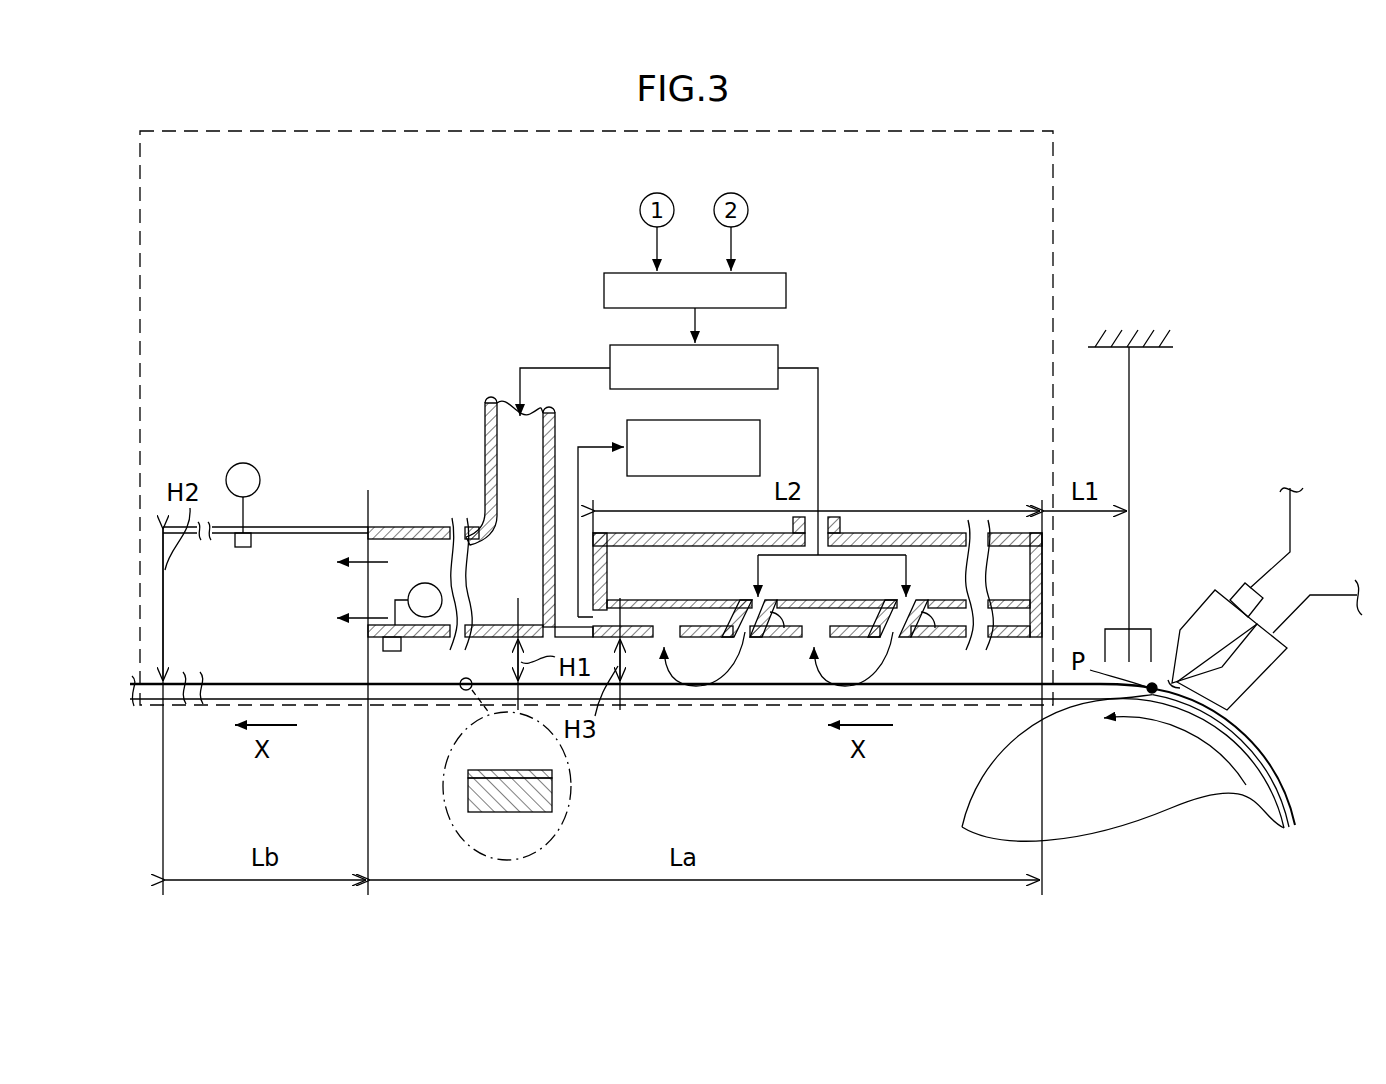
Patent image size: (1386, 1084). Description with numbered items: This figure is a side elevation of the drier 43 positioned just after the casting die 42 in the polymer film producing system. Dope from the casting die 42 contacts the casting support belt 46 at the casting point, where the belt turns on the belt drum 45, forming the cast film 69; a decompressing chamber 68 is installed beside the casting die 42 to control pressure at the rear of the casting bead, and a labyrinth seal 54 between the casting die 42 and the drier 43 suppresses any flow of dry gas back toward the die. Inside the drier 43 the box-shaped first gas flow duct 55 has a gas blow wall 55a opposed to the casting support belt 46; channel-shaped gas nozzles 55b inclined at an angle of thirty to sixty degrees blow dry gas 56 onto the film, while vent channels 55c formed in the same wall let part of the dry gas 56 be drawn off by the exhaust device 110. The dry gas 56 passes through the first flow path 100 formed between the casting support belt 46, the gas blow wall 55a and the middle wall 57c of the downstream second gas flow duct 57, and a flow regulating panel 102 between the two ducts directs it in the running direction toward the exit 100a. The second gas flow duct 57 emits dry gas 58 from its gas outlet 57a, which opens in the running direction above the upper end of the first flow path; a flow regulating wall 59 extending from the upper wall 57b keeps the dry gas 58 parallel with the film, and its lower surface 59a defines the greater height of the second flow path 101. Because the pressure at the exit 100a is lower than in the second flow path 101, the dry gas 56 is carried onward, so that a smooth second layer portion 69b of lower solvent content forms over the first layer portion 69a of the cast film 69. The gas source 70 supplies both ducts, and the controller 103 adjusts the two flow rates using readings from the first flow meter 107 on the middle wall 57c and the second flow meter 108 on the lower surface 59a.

The drier 43 is at (1053, 232).
The controller 103 is at (788, 290).
The gas source 70 is at (780, 352).
The exhaust device 110 is at (762, 447).
The second gas flow duct 57 is at (476, 444).
The gas outlet 57a is at (378, 582).
The upper wall 57b is at (368, 527).
The middle wall 57c is at (486, 620).
The flow regulating panel 102 is at (558, 612).
The first gas flow duct 55 is at (891, 526).
The gas blow wall 55a is at (633, 625).
The gas nozzles 55b is at (742, 626).
The vent channels 55c is at (684, 626).
The dry gas 56 is at (724, 679).
The dry gas 58 is at (348, 612).
The flow regulating wall 59 is at (306, 523).
The lower surface 59a is at (242, 572).
The second flow meter 108 is at (245, 578).
The first flow meter 107 is at (391, 652).
The first flow path 100 is at (472, 657).
The exit 100a is at (364, 657).
The second flow path 101 is at (228, 631).
The casting support belt 46 is at (790, 697).
The cast film 69 is at (564, 775).
The first layer portion 69a is at (636, 770).
The second layer portion 69b is at (553, 775).
The belt drum 45 is at (978, 785).
The casting die 42 is at (1200, 607).
The decompressing chamber 68 is at (1258, 678).
The labyrinth seal 54 is at (1131, 427).